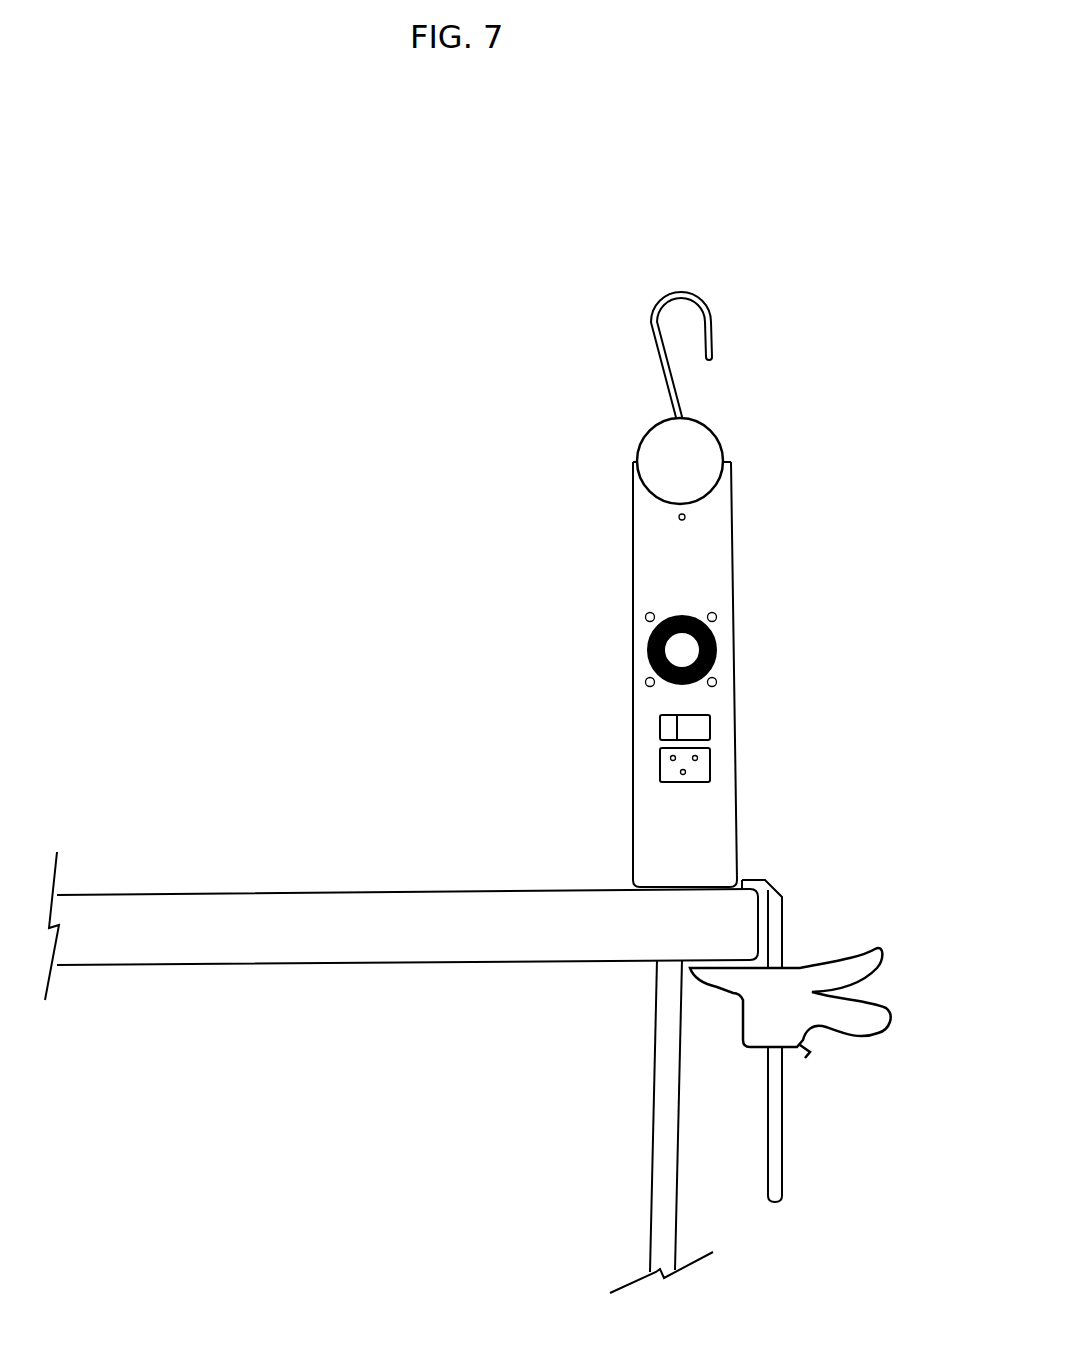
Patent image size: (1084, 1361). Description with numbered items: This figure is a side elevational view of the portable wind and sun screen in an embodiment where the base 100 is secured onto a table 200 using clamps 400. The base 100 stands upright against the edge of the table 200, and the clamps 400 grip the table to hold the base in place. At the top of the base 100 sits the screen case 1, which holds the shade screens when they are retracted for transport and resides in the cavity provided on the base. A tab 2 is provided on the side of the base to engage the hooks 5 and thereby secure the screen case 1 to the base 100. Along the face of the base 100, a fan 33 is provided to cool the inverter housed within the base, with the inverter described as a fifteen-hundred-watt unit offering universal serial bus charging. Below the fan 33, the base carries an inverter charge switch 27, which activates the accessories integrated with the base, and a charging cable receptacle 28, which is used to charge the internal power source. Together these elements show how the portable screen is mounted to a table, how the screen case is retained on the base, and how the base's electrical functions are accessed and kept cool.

The base 100 is at (571, 565).
The table 200 is at (255, 853).
The clamps 400 is at (820, 970).
The screen case 1 is at (700, 442).
The tab 2 is at (690, 517).
The hooks 5 is at (655, 302).
The inverter charge switch 27 is at (660, 724).
The charging cable receptacle 28 is at (700, 768).
The fan 33 is at (716, 636).